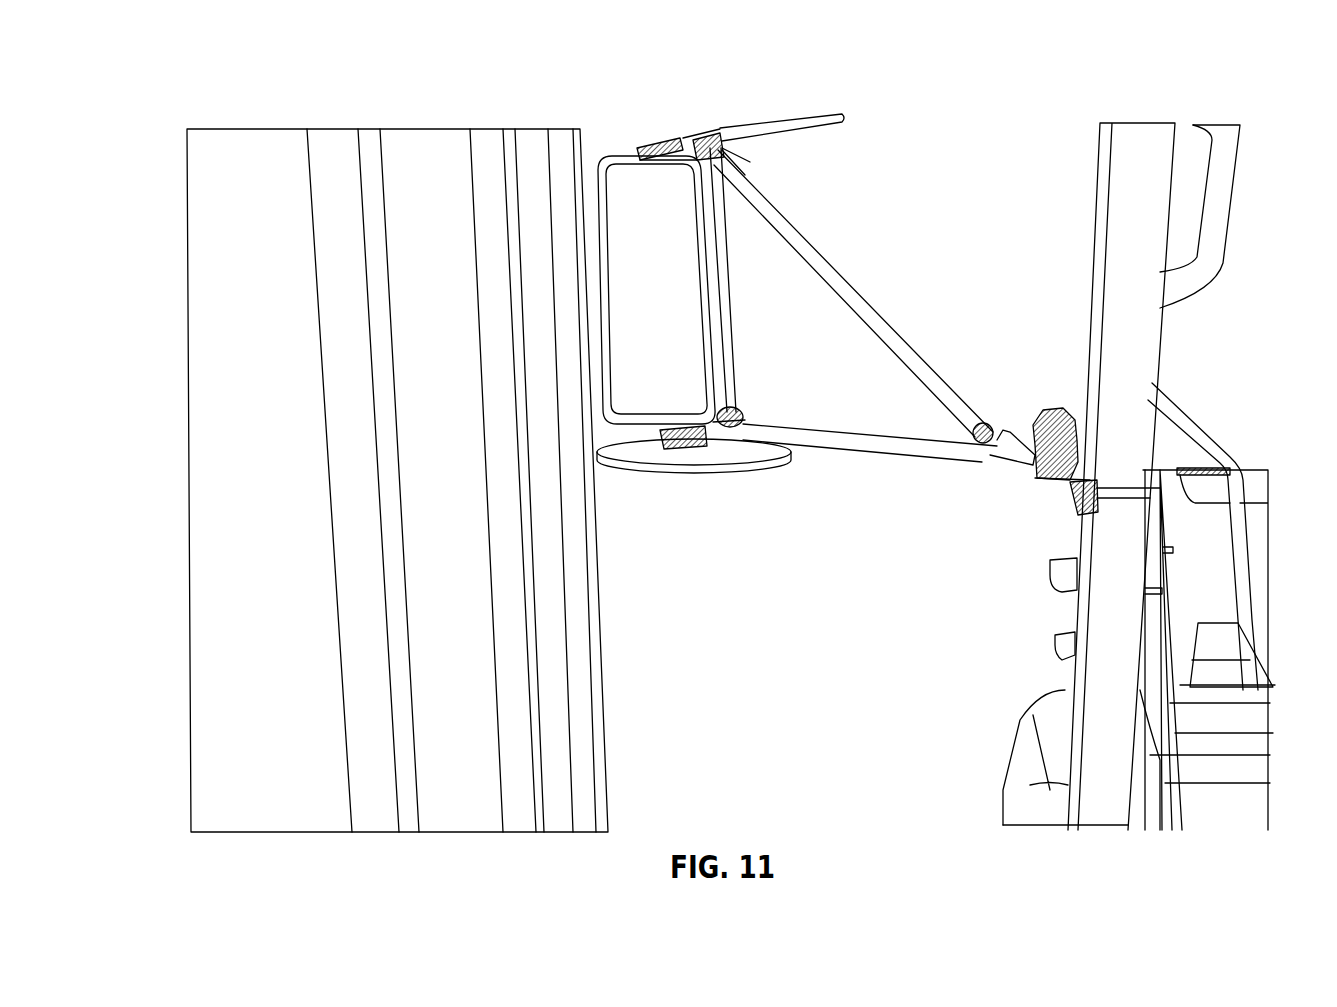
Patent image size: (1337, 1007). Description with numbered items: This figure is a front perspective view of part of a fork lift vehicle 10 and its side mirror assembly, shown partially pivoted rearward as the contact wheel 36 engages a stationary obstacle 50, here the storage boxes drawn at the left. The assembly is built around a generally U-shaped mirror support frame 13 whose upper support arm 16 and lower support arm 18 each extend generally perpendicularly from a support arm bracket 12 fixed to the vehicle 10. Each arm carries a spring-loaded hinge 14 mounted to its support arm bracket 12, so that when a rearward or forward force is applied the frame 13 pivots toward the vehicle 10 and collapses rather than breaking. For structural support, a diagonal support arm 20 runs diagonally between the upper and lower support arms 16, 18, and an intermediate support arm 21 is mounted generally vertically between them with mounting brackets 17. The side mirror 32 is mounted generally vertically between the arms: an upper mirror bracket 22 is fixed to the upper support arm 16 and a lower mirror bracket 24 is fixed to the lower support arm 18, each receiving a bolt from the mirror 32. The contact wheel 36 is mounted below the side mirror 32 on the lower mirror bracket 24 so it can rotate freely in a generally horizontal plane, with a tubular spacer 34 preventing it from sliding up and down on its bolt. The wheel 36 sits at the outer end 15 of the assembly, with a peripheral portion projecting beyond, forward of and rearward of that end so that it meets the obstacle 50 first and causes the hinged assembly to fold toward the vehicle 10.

The fork lift vehicle 10 is at (1075, 190).
The support arm bracket 12 is at (1077, 497).
The mirror support frame 13 is at (822, 462).
The spring-loaded hinge 14 is at (1028, 423).
The outer end 15 is at (653, 125).
The upper support arm 16 is at (770, 112).
The mounting bracket 17 is at (722, 147).
The lower support arm 18 is at (913, 445).
The diagonal support arm 20 is at (832, 277).
The intermediate support arm 21 is at (725, 300).
The upper mirror bracket 22 is at (673, 127).
The lower mirror bracket 24 is at (733, 410).
The side mirror 32 is at (645, 278).
The tubular spacer 34 is at (681, 447).
The contact wheel 36 is at (708, 472).
The stationary obstacle 50 is at (272, 661).